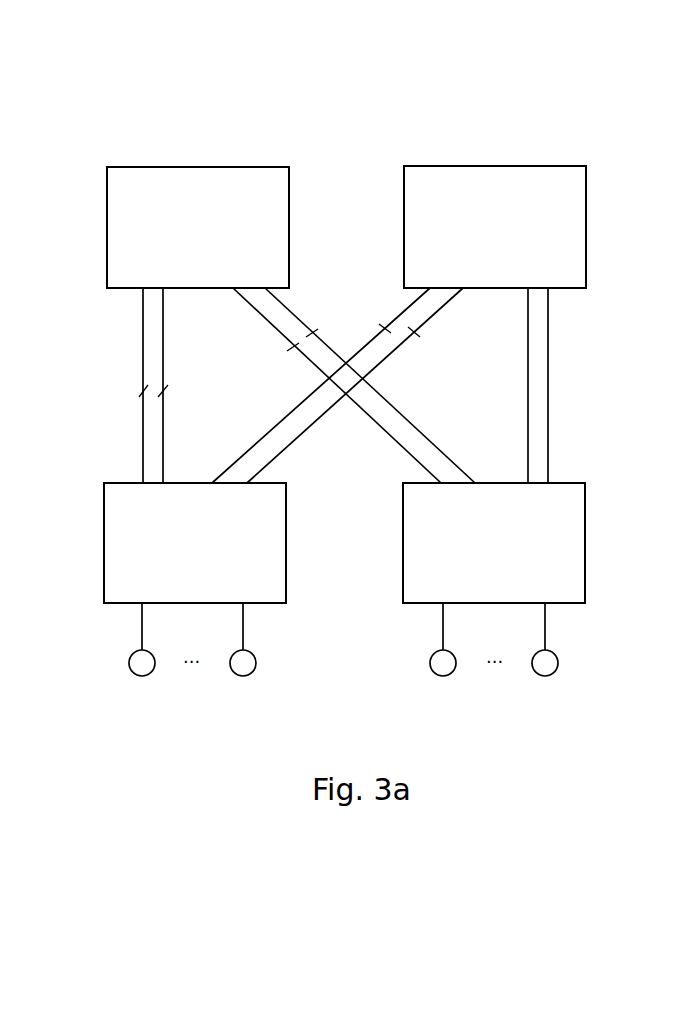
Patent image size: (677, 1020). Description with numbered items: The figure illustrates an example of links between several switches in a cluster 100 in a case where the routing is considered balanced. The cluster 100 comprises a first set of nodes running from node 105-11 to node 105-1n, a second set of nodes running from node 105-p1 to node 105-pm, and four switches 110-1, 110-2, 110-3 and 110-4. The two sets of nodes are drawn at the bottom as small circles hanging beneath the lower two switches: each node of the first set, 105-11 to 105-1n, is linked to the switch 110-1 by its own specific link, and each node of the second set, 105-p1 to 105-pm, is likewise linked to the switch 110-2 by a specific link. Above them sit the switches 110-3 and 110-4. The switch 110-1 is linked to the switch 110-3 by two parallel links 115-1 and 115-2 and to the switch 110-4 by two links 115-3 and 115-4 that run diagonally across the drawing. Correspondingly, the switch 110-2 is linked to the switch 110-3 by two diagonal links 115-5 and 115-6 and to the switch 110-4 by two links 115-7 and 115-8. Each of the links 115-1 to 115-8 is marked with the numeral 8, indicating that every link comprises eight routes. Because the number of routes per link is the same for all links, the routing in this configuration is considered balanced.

The cluster 100 is at (573, 93).
The switch 110-1 is at (225, 586).
The switch 110-2 is at (513, 586).
The switch 110-3 is at (228, 268).
The switch 110-4 is at (517, 268).
The link 115-1 is at (143, 345).
The link 115-2 is at (163, 407).
The link 115-3 is at (247, 448).
The link 115-4 is at (293, 442).
The link 115-5 is at (272, 327).
The link 115-6 is at (450, 410).
The link 115-7 is at (528, 373).
The link 115-8 is at (548, 367).
The routes 8 is at (279, 356).
The node 105-11 is at (146, 675).
The node 105-1n is at (247, 675).
The node 105-p1 is at (447, 675).
The node 105-pm is at (549, 675).